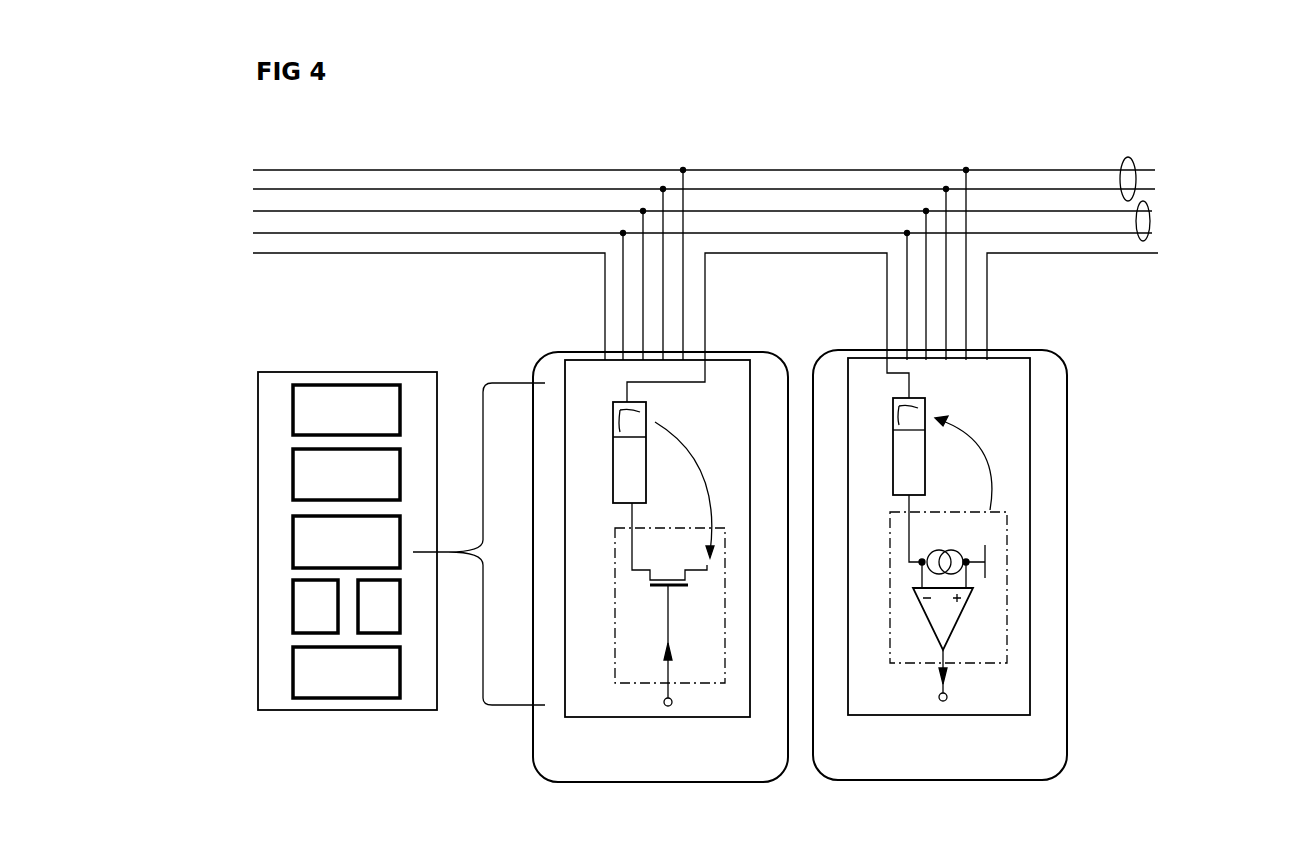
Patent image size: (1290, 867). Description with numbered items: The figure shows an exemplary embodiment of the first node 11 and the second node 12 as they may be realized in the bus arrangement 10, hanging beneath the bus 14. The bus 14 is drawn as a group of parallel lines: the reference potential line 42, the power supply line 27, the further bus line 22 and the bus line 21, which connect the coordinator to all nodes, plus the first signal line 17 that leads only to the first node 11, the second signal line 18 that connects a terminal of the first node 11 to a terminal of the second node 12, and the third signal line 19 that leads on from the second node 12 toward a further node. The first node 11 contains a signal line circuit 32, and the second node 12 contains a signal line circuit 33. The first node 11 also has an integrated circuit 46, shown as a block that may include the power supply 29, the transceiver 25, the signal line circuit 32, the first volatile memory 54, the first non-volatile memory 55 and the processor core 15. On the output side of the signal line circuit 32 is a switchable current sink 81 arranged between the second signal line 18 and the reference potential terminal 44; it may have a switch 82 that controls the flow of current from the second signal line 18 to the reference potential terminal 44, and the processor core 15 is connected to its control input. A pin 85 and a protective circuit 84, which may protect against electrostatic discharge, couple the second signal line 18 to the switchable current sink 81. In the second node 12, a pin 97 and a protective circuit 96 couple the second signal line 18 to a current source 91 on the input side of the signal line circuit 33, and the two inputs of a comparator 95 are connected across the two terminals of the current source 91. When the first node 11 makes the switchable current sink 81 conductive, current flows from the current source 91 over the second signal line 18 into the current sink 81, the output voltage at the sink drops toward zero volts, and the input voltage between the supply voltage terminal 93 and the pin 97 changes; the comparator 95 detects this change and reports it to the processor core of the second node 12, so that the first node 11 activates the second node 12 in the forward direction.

The bus arrangement 10 is at (1028, 90).
The bus 14 is at (1228, 160).
The reference potential line 42 is at (1148, 168).
The power supply line 27 is at (1148, 190).
The further bus line 22 is at (1150, 212).
The bus line 21 is at (1150, 234).
The first signal line 17 is at (358, 255).
The second signal line 18 is at (818, 256).
The third signal line 19 is at (1110, 257).
The first node 11 is at (728, 785).
The second node 12 is at (975, 785).
The signal line circuit 32 is at (640, 720).
The signal line circuit 33 is at (915, 720).
The integrated circuit 46 is at (386, 714).
The power supply 29 is at (409, 405).
The transceiver 25 is at (400, 469).
The first volatile memory 54 is at (292, 615).
The first non-volatile memory 55 is at (400, 611).
The processor core 15 is at (400, 686).
The protective circuit 84 is at (612, 470).
The pin 85 is at (612, 422).
The switchable current sink 81 is at (684, 528).
The switch 82 is at (660, 576).
The reference potential terminal 44 is at (707, 574).
The protective circuit 96 is at (926, 456).
The pin 97 is at (927, 409).
The current source 91 is at (942, 552).
The supply voltage terminal 93 is at (985, 568).
The comparator 95 is at (959, 618).